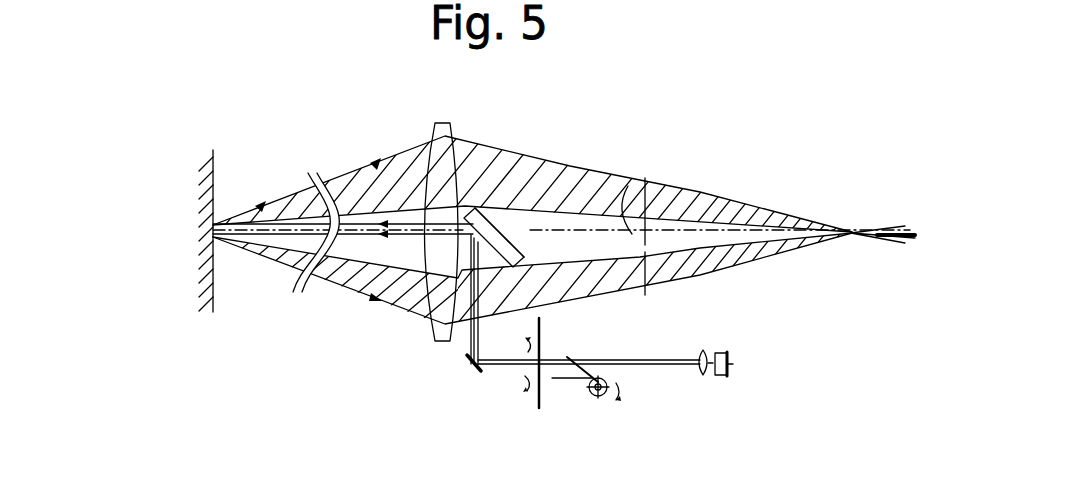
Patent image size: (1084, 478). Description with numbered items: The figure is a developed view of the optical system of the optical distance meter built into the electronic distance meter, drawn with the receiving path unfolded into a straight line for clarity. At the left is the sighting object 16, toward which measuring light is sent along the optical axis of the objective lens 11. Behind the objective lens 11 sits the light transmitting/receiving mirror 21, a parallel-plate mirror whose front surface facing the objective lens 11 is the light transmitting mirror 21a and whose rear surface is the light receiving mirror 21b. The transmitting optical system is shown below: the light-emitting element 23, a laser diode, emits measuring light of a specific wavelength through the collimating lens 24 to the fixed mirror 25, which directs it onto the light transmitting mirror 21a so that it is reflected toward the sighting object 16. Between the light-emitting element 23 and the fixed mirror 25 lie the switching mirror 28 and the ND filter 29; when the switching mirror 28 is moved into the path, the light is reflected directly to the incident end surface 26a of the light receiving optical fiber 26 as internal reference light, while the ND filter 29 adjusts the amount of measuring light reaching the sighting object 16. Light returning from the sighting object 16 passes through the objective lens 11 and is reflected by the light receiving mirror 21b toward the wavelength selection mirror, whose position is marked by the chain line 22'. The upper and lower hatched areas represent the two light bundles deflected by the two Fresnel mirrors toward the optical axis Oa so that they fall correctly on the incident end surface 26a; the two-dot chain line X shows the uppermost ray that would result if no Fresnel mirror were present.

The objective lens 11 is at (445, 123).
The sighting object 16 is at (213, 188).
The light transmitting/receiving mirror 21 is at (522, 250).
The light transmitting mirror 21a is at (489, 272).
The light receiving mirror 21b is at (495, 220).
The position of the wavelength selection mirror 22' is at (677, 252).
The light-emitting element 23 is at (720, 353).
The collimating lens 24 is at (703, 376).
The fixed mirror 25 is at (467, 372).
The light receiving optical fiber 26 is at (898, 233).
The incident end surface 26a is at (851, 229).
The switching mirror 28 is at (567, 355).
The ND filter 29 is at (542, 397).
The optical axis Oa is at (632, 165).
The uppermost light ray X is at (788, 208).